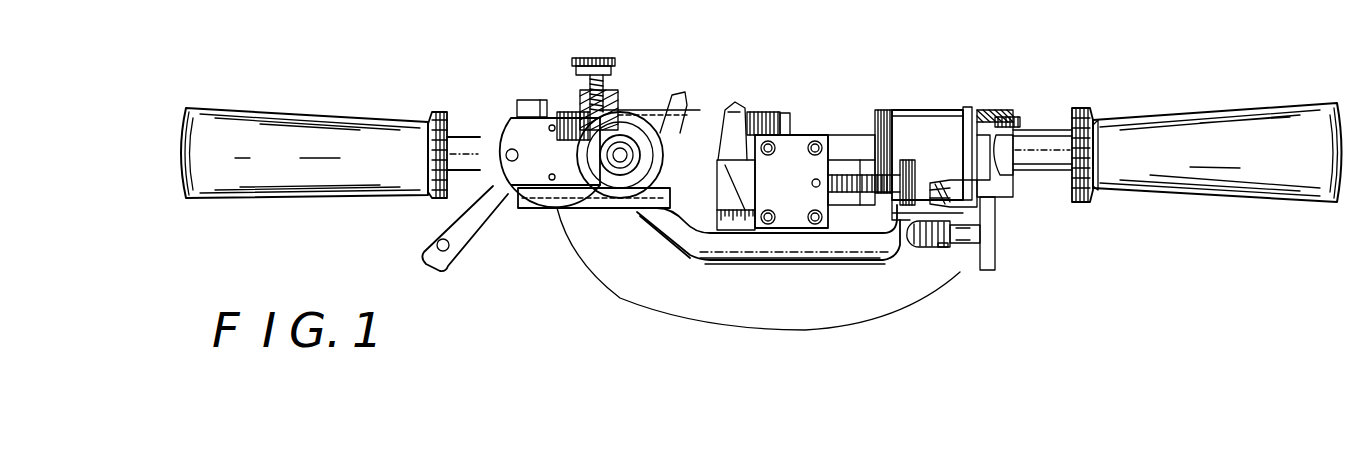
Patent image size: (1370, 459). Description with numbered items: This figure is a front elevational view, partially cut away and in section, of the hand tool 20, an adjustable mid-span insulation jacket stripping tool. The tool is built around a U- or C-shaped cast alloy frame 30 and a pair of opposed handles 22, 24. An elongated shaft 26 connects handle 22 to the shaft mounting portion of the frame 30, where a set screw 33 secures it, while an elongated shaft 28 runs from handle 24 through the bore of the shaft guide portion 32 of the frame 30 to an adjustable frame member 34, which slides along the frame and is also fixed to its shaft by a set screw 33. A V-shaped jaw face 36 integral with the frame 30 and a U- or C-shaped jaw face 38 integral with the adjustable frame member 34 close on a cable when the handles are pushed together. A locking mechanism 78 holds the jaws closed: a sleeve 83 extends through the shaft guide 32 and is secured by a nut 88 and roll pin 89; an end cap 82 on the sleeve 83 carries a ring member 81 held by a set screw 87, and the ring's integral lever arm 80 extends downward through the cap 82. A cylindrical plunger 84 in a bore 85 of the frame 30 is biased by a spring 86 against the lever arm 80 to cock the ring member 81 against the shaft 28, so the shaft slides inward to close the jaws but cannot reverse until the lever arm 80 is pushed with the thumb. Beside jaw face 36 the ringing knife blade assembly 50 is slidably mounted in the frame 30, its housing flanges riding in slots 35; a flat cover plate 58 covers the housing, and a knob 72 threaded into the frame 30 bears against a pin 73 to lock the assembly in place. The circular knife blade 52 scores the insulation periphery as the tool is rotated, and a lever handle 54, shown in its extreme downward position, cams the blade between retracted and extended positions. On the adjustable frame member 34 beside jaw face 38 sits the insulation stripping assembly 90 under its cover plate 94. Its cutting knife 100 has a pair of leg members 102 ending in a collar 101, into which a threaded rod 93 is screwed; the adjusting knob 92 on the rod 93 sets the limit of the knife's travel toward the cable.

The hand tool 20 is at (614, 306).
The handle 22 is at (323, 117).
The handle 24 is at (1168, 120).
The elongated shaft 26 is at (466, 135).
The elongated shaft 28 is at (836, 175).
The frame 30 is at (738, 318).
The shaft guide portion 32 is at (920, 110).
The set screw 33 is at (575, 117).
The adjustable frame member 34 is at (787, 118).
The slots 35 is at (573, 200).
The jaw face 36 is at (680, 108).
The jaw face 38 is at (722, 135).
The ringing knife blade assembly 50 is at (498, 208).
The circular knife blade 52 is at (640, 125).
The lever handle 54 is at (458, 250).
The cover plate 58 is at (493, 124).
The knob 72 is at (601, 58).
The pin 73 is at (610, 110).
The locking mechanism 78 is at (1010, 214).
The lever arm 80 is at (996, 260).
The ring member 81 is at (990, 115).
The end cap 82 is at (1005, 195).
The sleeve 83 is at (967, 110).
The cylindrical plunger 84 is at (965, 248).
The bore 85 is at (920, 244).
The spring 86 is at (940, 248).
The set screw 87 is at (1006, 118).
The nut 88 is at (882, 110).
The roll pin 89 is at (952, 186).
The insulation stripping assembly 90 is at (795, 215).
The adjusting knob 92 is at (906, 164).
The threaded rod 93 is at (862, 205).
The cover plate 94 is at (798, 188).
The cutting knife 100 is at (720, 172).
The collar 101 is at (873, 175).
The leg members 102 is at (832, 135).